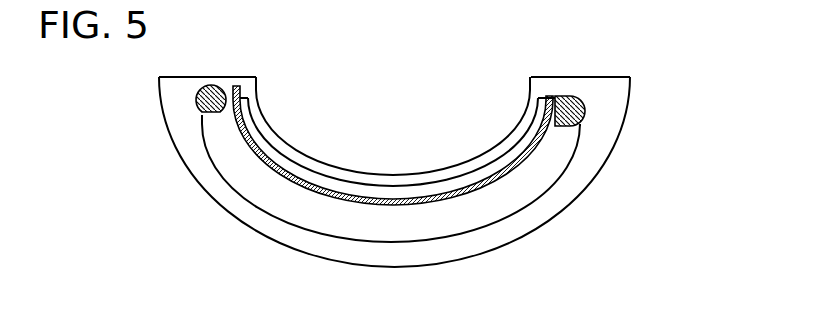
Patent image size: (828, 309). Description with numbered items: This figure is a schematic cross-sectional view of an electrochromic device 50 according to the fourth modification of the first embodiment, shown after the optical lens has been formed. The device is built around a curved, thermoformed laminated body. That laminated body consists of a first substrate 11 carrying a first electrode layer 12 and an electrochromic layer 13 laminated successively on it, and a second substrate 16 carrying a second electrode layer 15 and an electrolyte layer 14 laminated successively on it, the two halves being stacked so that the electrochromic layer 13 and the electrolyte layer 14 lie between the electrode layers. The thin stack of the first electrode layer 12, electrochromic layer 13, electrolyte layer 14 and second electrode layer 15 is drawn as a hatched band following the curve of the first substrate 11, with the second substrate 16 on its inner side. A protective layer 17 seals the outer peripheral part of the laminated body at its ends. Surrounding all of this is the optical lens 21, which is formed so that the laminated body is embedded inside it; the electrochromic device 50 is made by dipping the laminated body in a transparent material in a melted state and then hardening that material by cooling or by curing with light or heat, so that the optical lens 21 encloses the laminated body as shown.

The electrochromic device 50 is at (429, 72).
The optical lens 21 is at (609, 90).
The first substrate 11 is at (520, 190).
The first electrode layer 12 is at (499, 145).
The electrochromic layer 13 is at (499, 145).
The electrolyte layer 14 is at (499, 145).
The second electrode layer 15 is at (530, 152).
The second substrate 16 is at (538, 96).
The protective layer 17 is at (212, 90).